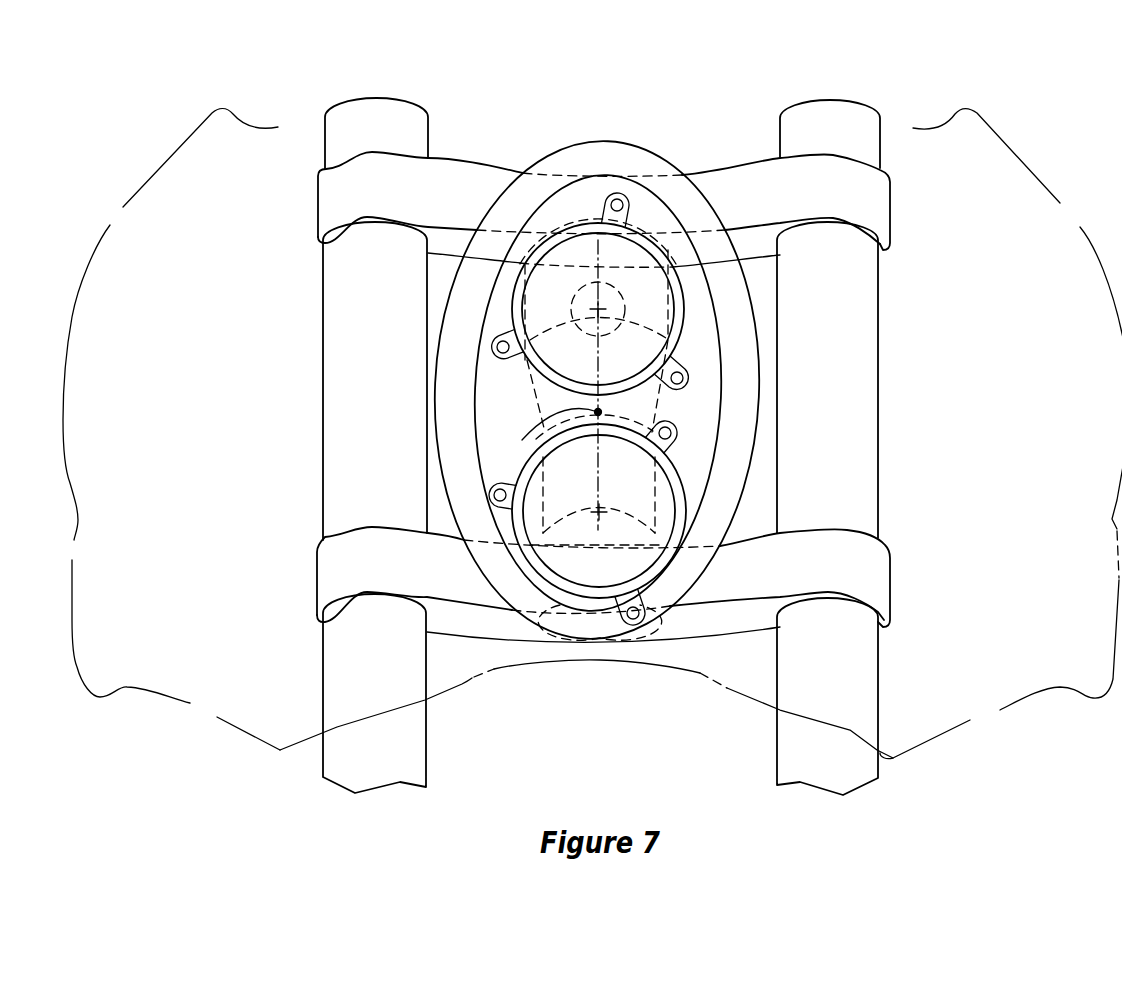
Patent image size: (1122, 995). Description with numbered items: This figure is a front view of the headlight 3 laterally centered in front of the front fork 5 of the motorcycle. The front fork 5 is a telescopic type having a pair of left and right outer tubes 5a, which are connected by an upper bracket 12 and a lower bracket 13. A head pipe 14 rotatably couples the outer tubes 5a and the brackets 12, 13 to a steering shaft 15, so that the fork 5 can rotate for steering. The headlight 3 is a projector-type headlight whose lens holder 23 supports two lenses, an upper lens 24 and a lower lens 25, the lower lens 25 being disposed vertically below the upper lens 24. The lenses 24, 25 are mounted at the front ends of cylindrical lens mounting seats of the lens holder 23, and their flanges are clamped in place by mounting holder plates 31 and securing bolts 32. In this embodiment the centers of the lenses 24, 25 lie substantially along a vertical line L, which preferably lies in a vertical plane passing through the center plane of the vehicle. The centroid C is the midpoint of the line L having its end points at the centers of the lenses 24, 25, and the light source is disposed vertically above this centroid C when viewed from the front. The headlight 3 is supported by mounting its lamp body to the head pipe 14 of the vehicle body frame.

The headlight 3 is at (602, 380).
The front fork 5 is at (589, 446).
The outer tubes 5a is at (345, 272).
The upper bracket 12 is at (876, 197).
The lower bracket 13 is at (875, 572).
The head pipe 14 is at (525, 397).
The steering shaft 15 is at (598, 625).
The lens holder 23 is at (702, 195).
The upper lens 24 is at (583, 252).
The lower lens 25 is at (566, 568).
The mounting holder plates 31 is at (682, 318).
The securing bolts 32 is at (620, 201).
The centroid C is at (594, 414).
The vertical line L is at (600, 474).